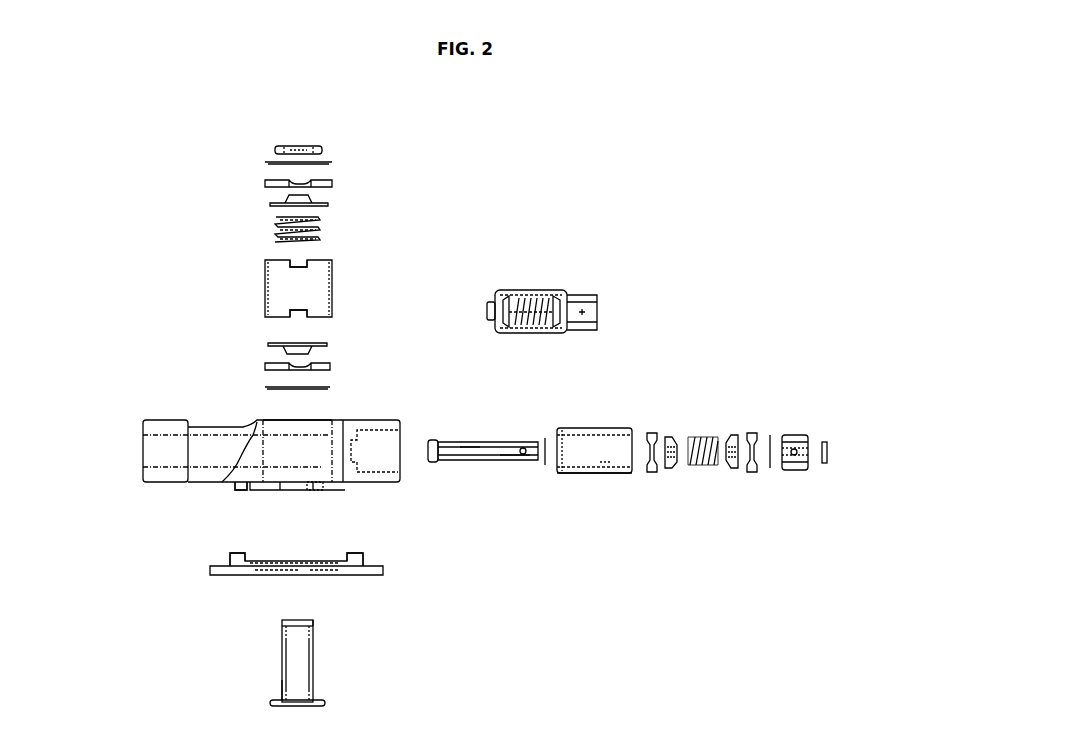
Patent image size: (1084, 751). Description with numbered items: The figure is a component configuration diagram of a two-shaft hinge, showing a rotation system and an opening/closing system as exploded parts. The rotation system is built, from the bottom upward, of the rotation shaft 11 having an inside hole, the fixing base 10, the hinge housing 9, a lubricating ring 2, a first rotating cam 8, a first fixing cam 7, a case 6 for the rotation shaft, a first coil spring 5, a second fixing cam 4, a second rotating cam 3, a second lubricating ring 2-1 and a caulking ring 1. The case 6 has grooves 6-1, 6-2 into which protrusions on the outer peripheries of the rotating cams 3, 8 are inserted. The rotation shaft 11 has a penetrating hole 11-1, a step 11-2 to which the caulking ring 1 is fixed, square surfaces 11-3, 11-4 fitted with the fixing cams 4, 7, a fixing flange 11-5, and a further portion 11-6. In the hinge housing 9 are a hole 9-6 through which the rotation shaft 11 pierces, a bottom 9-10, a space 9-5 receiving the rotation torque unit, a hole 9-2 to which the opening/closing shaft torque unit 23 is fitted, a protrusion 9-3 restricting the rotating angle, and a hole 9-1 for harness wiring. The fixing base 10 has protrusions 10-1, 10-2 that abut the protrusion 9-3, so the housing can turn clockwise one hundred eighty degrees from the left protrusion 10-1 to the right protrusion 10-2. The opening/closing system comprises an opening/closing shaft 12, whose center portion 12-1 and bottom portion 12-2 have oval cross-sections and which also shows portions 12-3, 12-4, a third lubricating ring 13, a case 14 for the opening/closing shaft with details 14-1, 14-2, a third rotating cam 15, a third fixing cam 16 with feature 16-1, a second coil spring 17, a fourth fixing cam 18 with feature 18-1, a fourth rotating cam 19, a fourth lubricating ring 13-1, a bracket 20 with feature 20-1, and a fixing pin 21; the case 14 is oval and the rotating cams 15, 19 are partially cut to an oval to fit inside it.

The caulking ring 1 is at (262, 148).
The lubricating ring 2 is at (255, 163).
The second lubricating ring 2-1 is at (248, 388).
The second rotating cam 3 is at (250, 183).
The second fixing cam 4 is at (255, 203).
The first coil spring 5 is at (250, 227).
The case for the rotation shaft 6 is at (250, 281).
The groove 6-1 is at (313, 272).
The groove 6-2 is at (313, 310).
The first fixing cam 7 is at (250, 344).
The first rotating cam 8 is at (248, 367).
The hinge housing 9 is at (256, 466).
The hole 9-1 is at (130, 453).
The hole 9-2 is at (396, 477).
The protrusion 9-3 is at (271, 503).
The space 9-5 is at (315, 440).
The hole 9-6 is at (336, 504).
The bottom 9-10 is at (287, 438).
The fixing base 10 is at (284, 554).
The protrusion 10-1 is at (275, 546).
The protrusion 10-2 is at (394, 546).
The rotation shaft 11 is at (276, 658).
The penetrating hole 11-1 is at (335, 608).
The step 11-2 is at (357, 619).
The square surface 11-3 is at (302, 667).
The square surface 11-4 is at (316, 685).
The fixing flange 11-5 is at (331, 705).
The sleeve bottom 11-6 is at (234, 698).
The opening/closing shaft 12 is at (495, 455).
The center portion 12-1 is at (527, 478).
The bottom portion 12-2 is at (503, 497).
The pin head 12-3 is at (459, 472).
The pin end 12-4 is at (492, 409).
The third lubricating ring 13 is at (555, 412).
The fourth lubricating ring 13-1 is at (809, 405).
The case for the opening/closing shaft 14 is at (611, 456).
The holder opening 14-1 is at (633, 485).
The holder bottom 14-2 is at (598, 501).
The third rotating cam 15 is at (662, 413).
The third fixing cam 16 is at (702, 446).
The cam piece groove 16-1 is at (707, 477).
The second coil spring 17 is at (709, 418).
The fourth fixing cam 18 is at (766, 430).
The cam piece groove 18-1 is at (767, 478).
The fourth rotating cam 19 is at (752, 424).
The bracket 20 is at (827, 439).
The cap hole 20-1 is at (831, 473).
The fixing pin 21 is at (857, 428).
The opening/closing shaft torque unit 23 is at (542, 283).